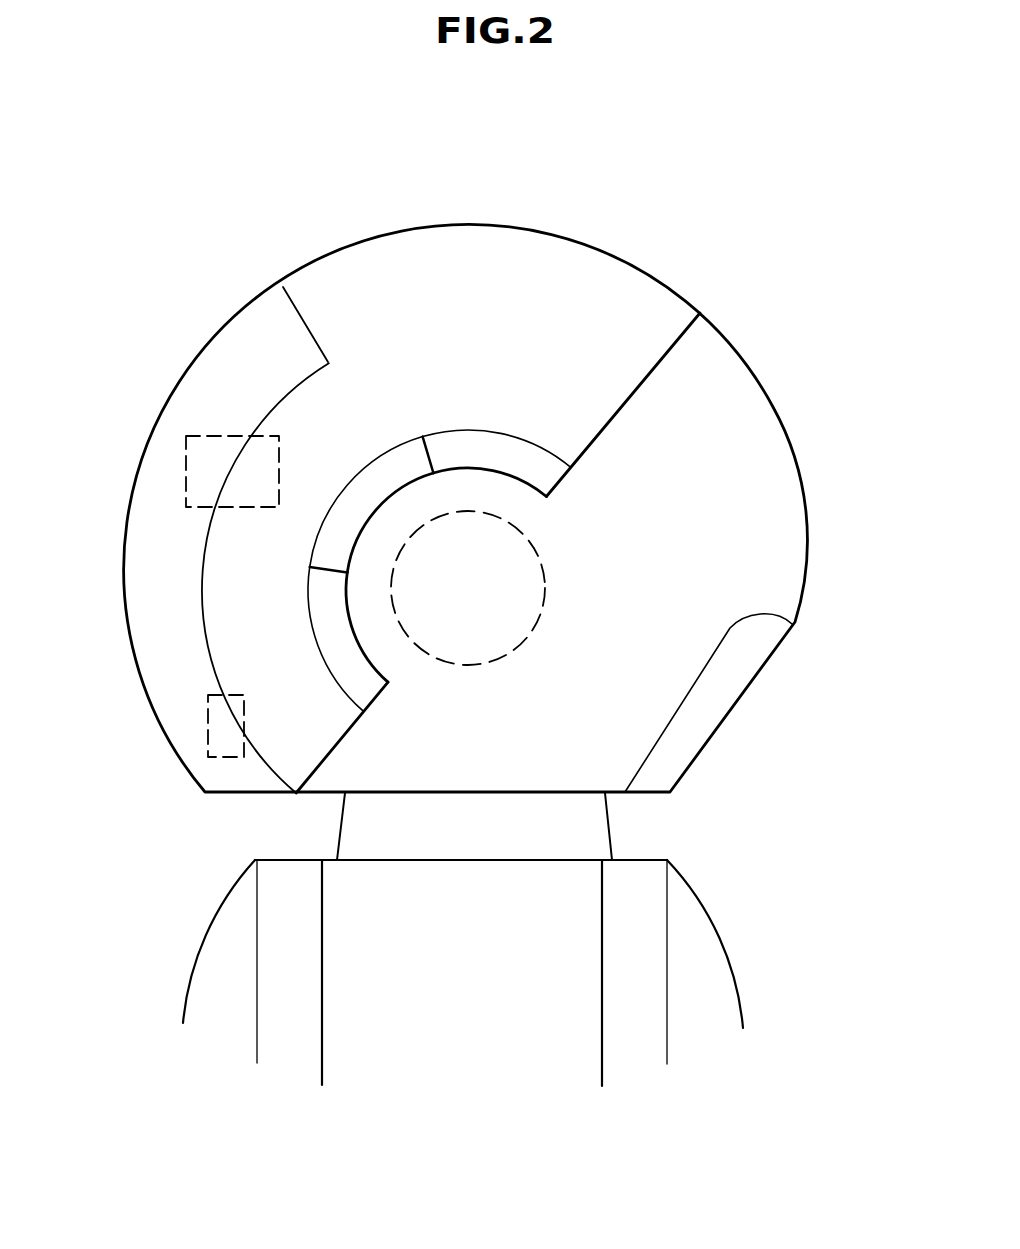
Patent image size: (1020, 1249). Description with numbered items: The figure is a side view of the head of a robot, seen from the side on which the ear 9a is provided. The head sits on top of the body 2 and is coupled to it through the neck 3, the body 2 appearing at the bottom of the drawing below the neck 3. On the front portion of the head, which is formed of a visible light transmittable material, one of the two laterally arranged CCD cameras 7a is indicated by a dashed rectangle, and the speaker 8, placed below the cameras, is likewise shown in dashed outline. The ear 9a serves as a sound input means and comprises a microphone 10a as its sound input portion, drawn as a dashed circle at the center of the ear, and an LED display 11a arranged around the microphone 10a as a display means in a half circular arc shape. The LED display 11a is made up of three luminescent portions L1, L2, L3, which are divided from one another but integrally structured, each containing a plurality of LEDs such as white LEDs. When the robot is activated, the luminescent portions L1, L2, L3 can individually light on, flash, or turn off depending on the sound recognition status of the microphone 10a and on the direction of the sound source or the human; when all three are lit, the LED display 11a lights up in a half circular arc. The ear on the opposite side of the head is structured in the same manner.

The body 2 is at (745, 961).
The neck 3 is at (593, 827).
The CCD camera 7a is at (223, 434).
The speaker 8 is at (197, 738).
The ear 9a is at (590, 513).
The microphone 10a is at (525, 578).
The LED display 11a is at (369, 475).
The luminescent portion L1 is at (320, 594).
The luminescent portion L2 is at (393, 467).
The luminescent portion L3 is at (495, 450).